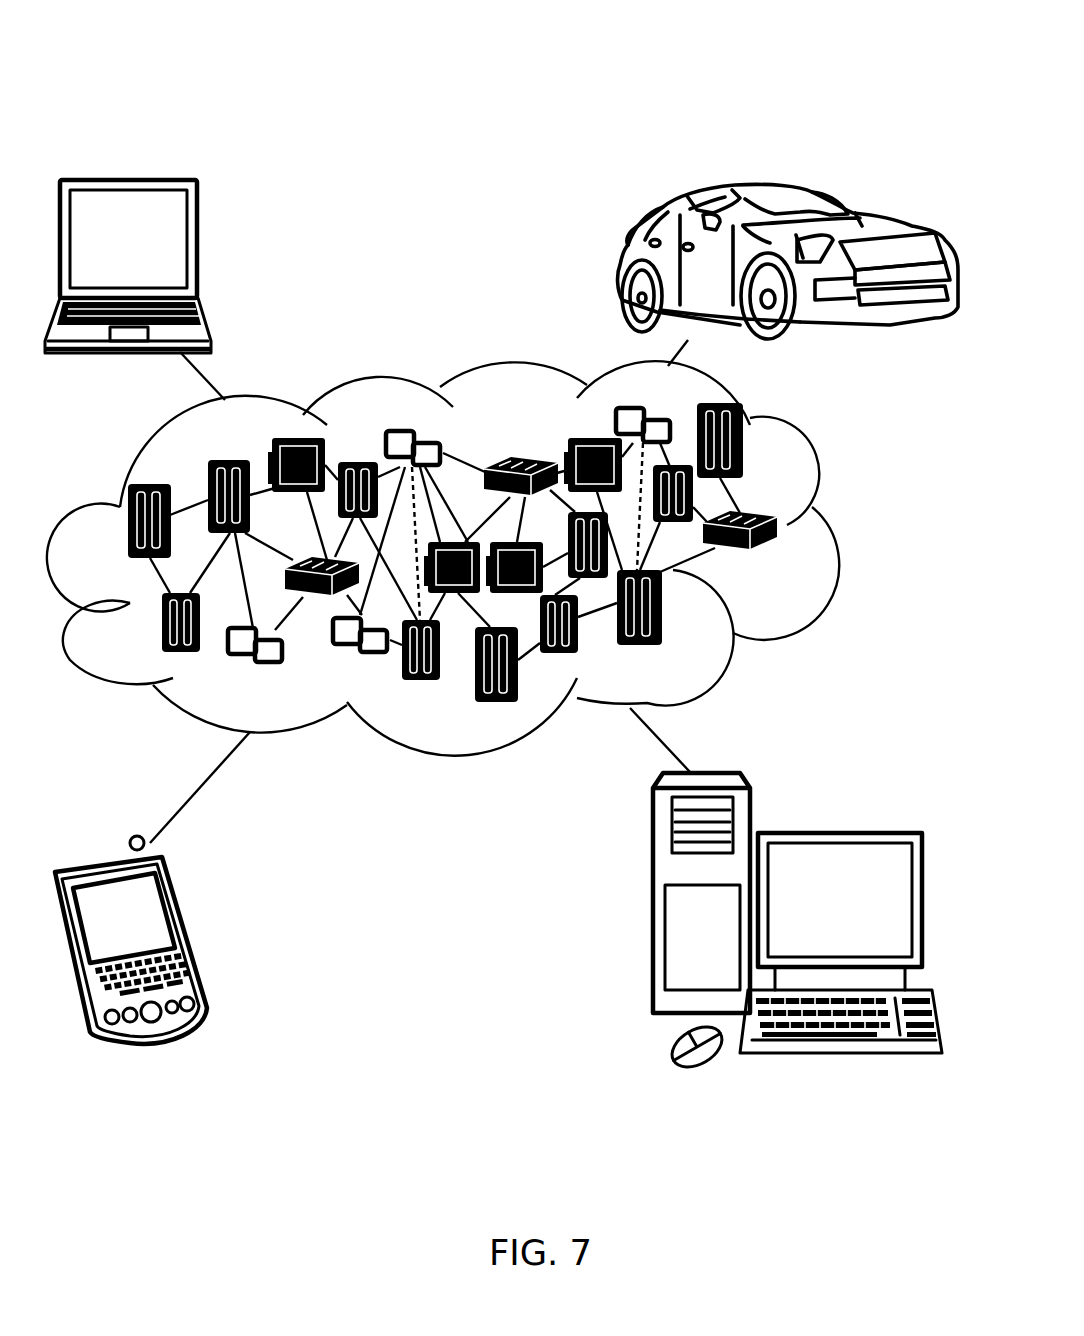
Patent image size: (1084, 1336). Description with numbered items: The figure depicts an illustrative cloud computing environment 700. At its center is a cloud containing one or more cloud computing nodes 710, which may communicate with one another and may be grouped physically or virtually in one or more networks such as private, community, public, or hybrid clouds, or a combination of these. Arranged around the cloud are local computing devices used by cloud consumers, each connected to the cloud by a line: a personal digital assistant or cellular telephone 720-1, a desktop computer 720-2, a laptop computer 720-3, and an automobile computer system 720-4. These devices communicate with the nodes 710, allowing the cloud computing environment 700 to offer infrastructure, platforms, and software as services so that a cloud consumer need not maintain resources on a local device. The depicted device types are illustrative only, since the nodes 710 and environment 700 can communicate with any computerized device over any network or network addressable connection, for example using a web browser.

The cloud computing environment 700 is at (780, 40).
The cloud computing nodes 710 is at (786, 566).
The personal digital assistant or cellular telephone 720-1 is at (190, 934).
The desktop computer 720-2 is at (848, 812).
The laptop computer 720-3 is at (200, 248).
The automobile computer system 720-4 is at (616, 258).